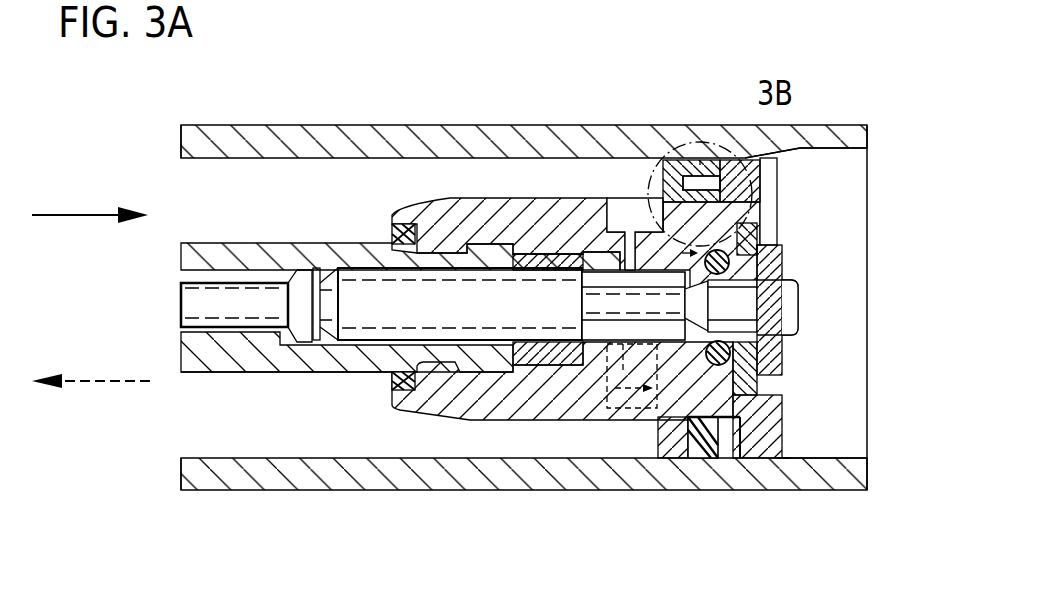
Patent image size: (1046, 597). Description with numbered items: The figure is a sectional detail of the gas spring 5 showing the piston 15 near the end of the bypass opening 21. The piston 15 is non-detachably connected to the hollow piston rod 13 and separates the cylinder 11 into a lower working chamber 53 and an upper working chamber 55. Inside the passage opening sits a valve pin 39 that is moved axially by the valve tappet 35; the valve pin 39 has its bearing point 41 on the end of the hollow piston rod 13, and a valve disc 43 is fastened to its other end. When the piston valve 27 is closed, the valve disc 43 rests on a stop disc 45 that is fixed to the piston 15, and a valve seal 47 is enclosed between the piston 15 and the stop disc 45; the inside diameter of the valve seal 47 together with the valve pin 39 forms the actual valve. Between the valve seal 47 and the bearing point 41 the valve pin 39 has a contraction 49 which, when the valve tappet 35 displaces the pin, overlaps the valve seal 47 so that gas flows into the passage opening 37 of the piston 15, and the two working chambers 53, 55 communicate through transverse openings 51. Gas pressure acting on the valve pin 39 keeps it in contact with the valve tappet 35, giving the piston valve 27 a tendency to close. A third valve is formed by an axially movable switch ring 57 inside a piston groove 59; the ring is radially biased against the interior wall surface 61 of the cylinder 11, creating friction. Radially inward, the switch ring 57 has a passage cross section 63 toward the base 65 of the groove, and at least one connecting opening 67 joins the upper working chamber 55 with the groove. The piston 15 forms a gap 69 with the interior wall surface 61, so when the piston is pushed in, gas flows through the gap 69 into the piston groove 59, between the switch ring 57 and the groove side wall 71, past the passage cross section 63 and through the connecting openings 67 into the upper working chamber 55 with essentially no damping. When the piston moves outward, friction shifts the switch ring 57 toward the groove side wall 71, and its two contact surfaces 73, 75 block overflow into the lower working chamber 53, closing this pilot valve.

The gas spring 5 is at (166, 519).
The cylinder 11 is at (349, 492).
The hollow piston rod 13 is at (245, 357).
The piston 15 is at (565, 220).
The bypass opening 21 is at (848, 127).
The piston valve 27 is at (657, 197).
The valve tappet 35 is at (246, 300).
The passage opening 37 is at (595, 340).
The valve pin 39 is at (720, 334).
The bearing point 41 is at (480, 228).
The valve disc 43 is at (860, 267).
The stop disc 45 is at (740, 395).
The valve seal 47 is at (680, 405).
The contraction 49 is at (611, 344).
The transverse openings 51 is at (617, 205).
The lower working chamber 53 is at (287, 437).
The upper working chamber 55 is at (833, 383).
The switch ring 57 is at (689, 168).
The piston groove 59 is at (772, 160).
The interior wall surface 61 is at (342, 165).
The passage cross section 63 is at (775, 200).
The base of the piston groove 65 is at (727, 422).
The connecting opening 67 is at (675, 160).
The gap 69 is at (786, 456).
The groove side wall 71 is at (862, 158).
The contact surface 73 is at (708, 152).
The contact surface 75 is at (730, 183).